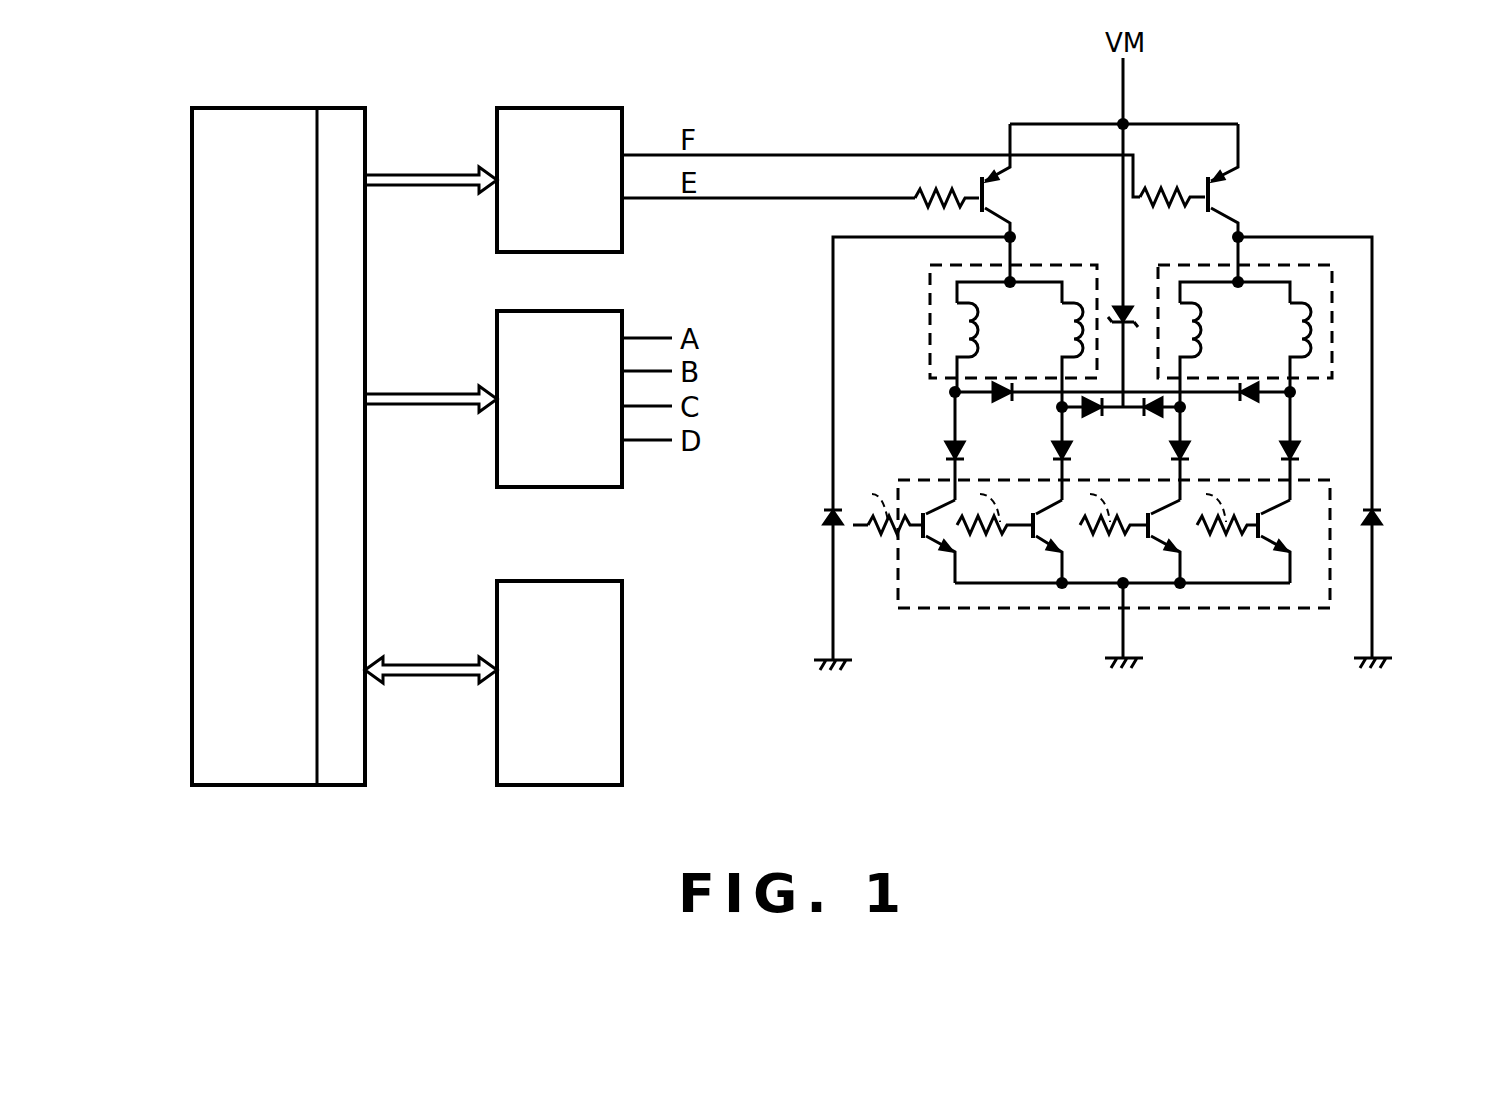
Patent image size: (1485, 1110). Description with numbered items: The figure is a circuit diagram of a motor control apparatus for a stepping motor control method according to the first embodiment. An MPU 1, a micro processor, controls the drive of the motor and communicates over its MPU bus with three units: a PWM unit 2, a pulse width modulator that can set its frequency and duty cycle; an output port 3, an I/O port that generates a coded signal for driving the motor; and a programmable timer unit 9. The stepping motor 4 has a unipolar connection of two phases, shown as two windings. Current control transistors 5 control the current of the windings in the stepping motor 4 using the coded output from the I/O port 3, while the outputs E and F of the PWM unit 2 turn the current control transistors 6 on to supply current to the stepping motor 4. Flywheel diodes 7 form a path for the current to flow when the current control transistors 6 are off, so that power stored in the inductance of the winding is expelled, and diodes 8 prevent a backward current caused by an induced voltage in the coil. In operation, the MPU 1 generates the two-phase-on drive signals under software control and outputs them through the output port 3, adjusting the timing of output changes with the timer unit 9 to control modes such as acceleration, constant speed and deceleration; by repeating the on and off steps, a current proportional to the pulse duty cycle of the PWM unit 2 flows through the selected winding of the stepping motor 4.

The MPU 1 is at (257, 108).
The PWM unit 2 is at (540, 108).
The output port 3 is at (531, 311).
The stepping motor 4 is at (930, 318).
The current control transistors 5 is at (1260, 608).
The current control transistors 6 is at (1000, 179).
The flywheel diodes 7 is at (823, 515).
The diodes 8 is at (947, 449).
The programmable timer unit 9 is at (535, 581).